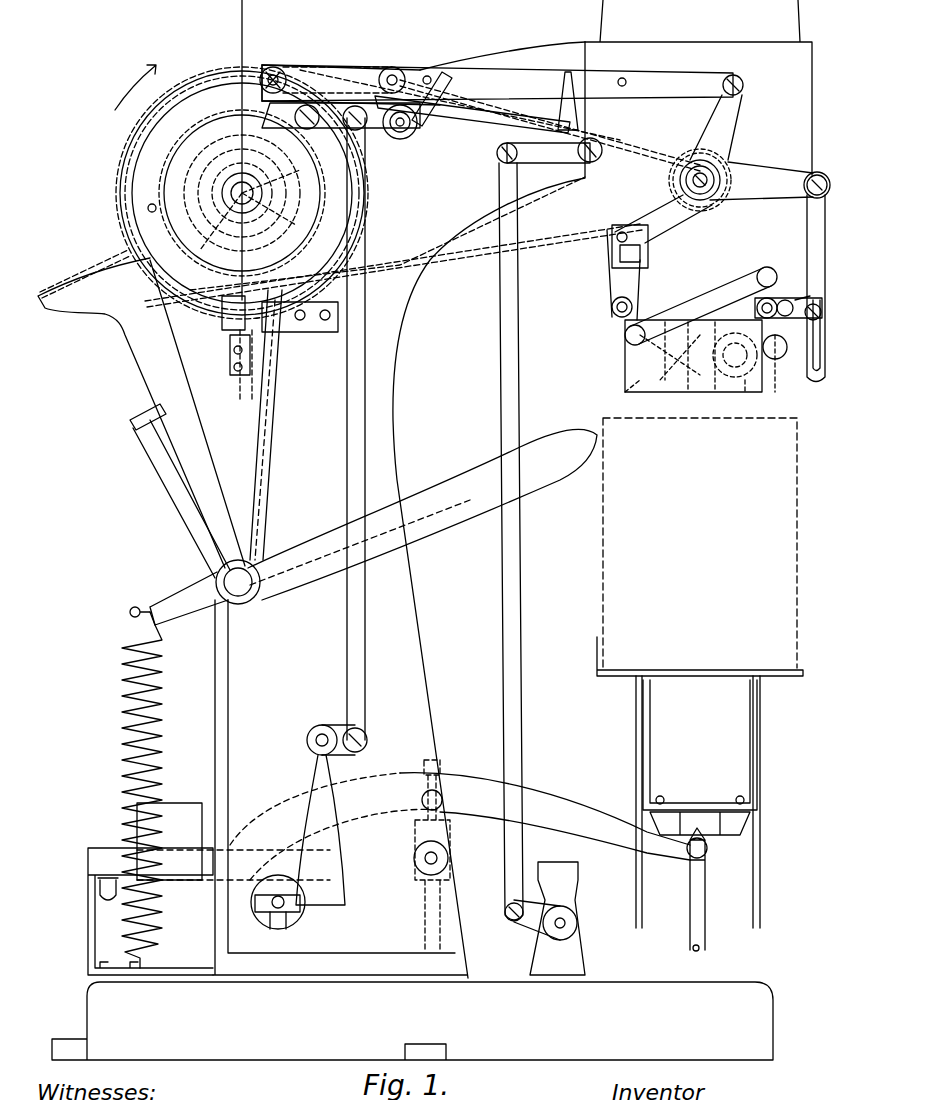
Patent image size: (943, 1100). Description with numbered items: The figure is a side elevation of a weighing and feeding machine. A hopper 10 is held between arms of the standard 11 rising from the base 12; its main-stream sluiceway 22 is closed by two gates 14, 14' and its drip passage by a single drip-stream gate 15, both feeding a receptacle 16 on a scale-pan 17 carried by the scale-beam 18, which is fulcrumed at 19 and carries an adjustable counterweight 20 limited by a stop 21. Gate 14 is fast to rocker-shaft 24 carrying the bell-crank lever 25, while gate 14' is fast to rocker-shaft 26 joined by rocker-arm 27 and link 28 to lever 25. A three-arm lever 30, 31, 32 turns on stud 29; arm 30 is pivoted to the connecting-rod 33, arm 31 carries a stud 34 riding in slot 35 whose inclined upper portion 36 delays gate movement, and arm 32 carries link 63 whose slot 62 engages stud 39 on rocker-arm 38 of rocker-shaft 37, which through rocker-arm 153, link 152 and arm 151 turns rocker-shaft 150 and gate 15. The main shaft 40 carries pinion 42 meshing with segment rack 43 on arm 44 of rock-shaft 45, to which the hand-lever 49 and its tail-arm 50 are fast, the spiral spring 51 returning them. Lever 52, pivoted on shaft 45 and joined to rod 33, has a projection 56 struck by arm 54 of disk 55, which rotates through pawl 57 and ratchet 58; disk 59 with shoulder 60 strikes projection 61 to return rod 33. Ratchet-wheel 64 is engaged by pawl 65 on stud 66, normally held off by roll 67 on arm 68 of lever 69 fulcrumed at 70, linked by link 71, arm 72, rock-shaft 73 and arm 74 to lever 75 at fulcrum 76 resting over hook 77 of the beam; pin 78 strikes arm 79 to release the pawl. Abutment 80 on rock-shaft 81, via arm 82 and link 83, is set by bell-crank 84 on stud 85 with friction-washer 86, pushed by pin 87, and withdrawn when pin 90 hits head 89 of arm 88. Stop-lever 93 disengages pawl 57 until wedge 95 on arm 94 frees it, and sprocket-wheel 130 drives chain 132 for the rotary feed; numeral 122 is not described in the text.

The hopper 10 is at (806, 108).
The standard 11 is at (394, 345).
The base 12 is at (328, 1040).
The gate 14 is at (670, 352).
The gate 14' is at (735, 355).
The drip-stream gate 15 is at (686, 390).
The receptacle 16 is at (800, 530).
The scale-pan 17 is at (712, 688).
The scale-beam 18 is at (558, 832).
The fulcrum 19 is at (415, 830).
The adjustable counterweight 20 is at (176, 818).
The stop 21 is at (88, 938).
The sluiceway 22 is at (622, 373).
The rocker-shaft 24 is at (610, 302).
The bell-crank lever 25 is at (626, 330).
The rocker-shaft 26 is at (605, 282).
The rocker-arm 27 is at (758, 298).
The link 28 is at (702, 300).
The stud 29 is at (735, 160).
The arm of three-arm lever 30 is at (733, 110).
The arm of three-arm lever 31 is at (662, 200).
The arm of three-arm lever 32 is at (770, 195).
The connecting-rod 33 is at (680, 80).
The stud 34 is at (620, 232).
The slot 35 is at (645, 255).
The upper portion of slot side wall 36 is at (600, 230).
The rocker-shaft 37 is at (815, 304).
The rocker-arm 38 is at (775, 358).
The stud 39 is at (808, 315).
The shaft 40 is at (222, 188).
The pinion 42 is at (210, 205).
The segment rack 43 is at (95, 265).
The arm 44 is at (135, 362).
The rock-shaft 45 is at (250, 594).
The hand-lever 49 is at (430, 495).
The tail-arm 50 is at (188, 592).
The spiral spring 51 is at (120, 715).
The lever 52 is at (270, 470).
The arm 54 is at (278, 338).
The disk 55 is at (150, 287).
The projection 56 is at (226, 332).
The pawl 57 is at (280, 200).
The ratchet 58 is at (236, 165).
The disk 59 is at (155, 182).
The shoulder 60 is at (157, 160).
The projection 61 is at (296, 65).
The slot 62 is at (816, 378).
The link 63 is at (806, 243).
The ratchet-wheel 64 is at (165, 198).
The pawl 65 is at (265, 70).
The stud 66 is at (388, 67).
The roll 67 is at (310, 104).
The arm 68 is at (385, 140).
The lever 69 is at (412, 135).
The fulcrum 70 is at (420, 122).
The link 71 is at (346, 420).
The arm 72 is at (362, 752).
The rock-shaft 73 is at (306, 736).
The arm 74 is at (310, 803).
The lever 75 is at (208, 905).
The fulcrum 76 is at (272, 910).
The hook 77 is at (98, 890).
The pin 78 is at (429, 75).
The arm 79 is at (447, 76).
The abutment 80 is at (580, 890).
The rock-shaft 81 is at (578, 924).
The arm 82 is at (514, 928).
The link 83 is at (523, 658).
The bell-crank 84 is at (528, 165).
The stud 85 is at (568, 165).
The friction-washer 86 is at (578, 150).
The pin 87 is at (624, 78).
The arm 88 is at (518, 112).
The head 89 is at (272, 66).
The pin 90 is at (148, 208).
The stop-lever 93 is at (255, 378).
The arm 94 is at (175, 503).
The wedge 95 is at (130, 418).
The box wall 122 is at (625, 392).
The sprocket-wheel 130 is at (380, 270).
The chain 132 is at (655, 135).
The rocker-shaft 150 is at (752, 296).
The arm 151 is at (716, 390).
The link 152 is at (750, 392).
The rocker-arm 153 is at (738, 367).